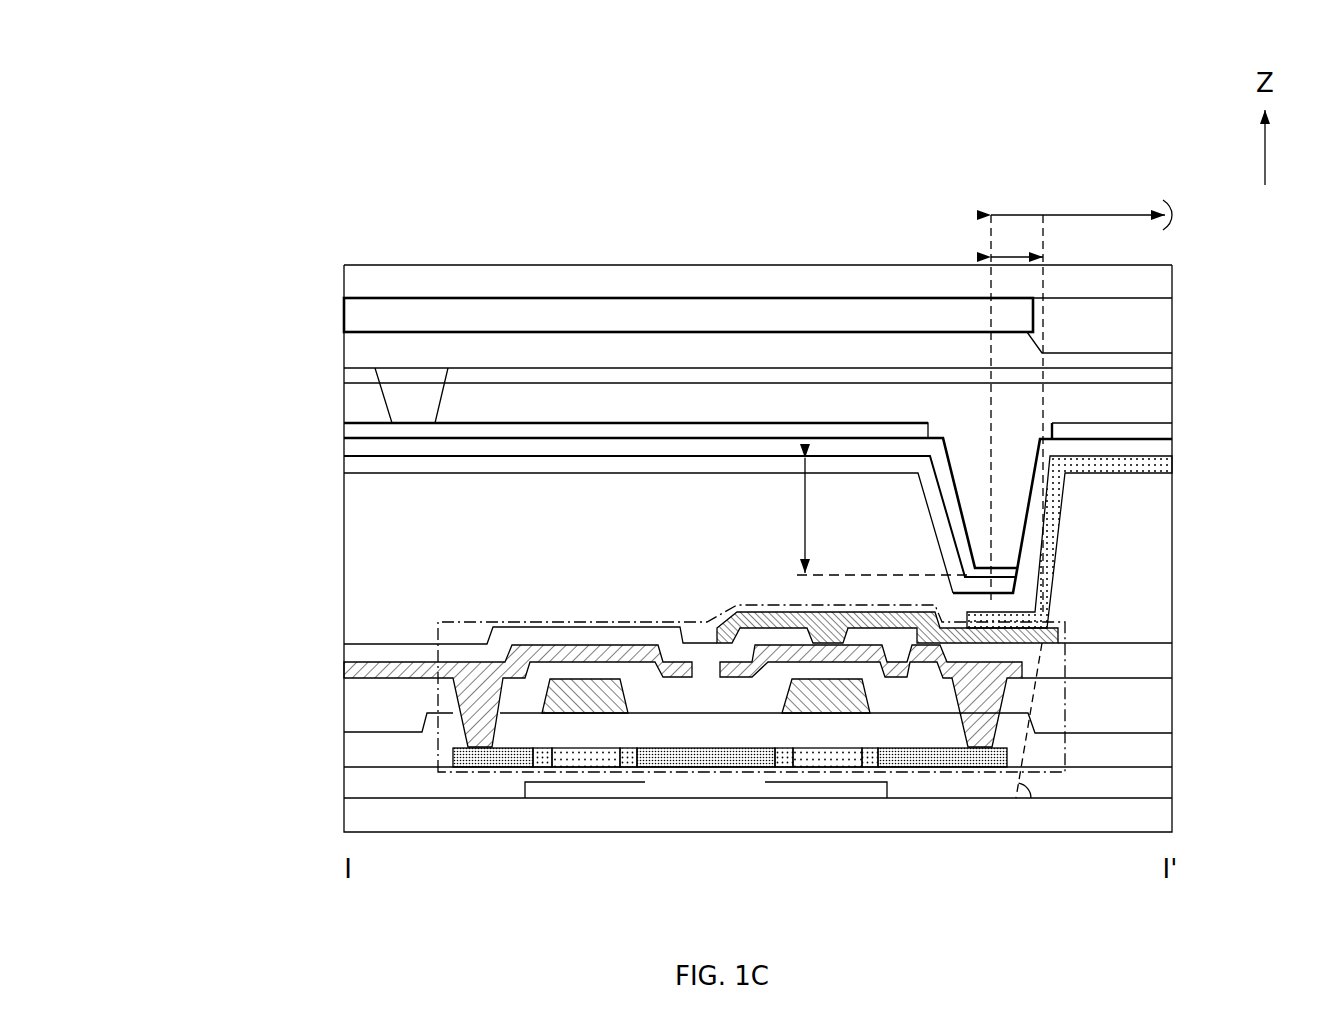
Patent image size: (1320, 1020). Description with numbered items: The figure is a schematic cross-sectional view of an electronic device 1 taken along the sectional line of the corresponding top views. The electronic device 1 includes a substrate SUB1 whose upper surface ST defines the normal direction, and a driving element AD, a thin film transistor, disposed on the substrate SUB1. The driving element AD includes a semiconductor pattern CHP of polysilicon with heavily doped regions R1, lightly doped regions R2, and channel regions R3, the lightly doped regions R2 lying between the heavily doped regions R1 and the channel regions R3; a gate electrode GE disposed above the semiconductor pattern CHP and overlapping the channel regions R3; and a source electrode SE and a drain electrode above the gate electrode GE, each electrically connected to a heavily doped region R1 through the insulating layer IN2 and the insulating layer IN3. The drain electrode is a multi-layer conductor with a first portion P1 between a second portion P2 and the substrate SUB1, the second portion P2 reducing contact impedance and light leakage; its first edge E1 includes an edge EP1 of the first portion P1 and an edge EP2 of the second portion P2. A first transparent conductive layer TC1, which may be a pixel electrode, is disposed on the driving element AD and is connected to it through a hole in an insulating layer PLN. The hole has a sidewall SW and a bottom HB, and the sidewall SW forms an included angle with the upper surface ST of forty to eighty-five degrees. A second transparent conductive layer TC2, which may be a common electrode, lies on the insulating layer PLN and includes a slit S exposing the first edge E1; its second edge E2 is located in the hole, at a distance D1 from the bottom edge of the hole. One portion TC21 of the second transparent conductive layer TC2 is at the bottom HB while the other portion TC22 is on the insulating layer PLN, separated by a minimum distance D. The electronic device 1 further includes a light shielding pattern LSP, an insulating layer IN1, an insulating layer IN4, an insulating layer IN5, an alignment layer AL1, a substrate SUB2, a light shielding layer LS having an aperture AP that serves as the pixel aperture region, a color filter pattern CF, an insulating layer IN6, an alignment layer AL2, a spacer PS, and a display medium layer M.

The driving element AD is at (937, 772).
The substrate SUB2 is at (1150, 283).
The substrate SUB1 is at (1150, 820).
The light shielding layer LS is at (362, 314).
The aperture AP is at (1039, 316).
The color filter pattern CF is at (1150, 332).
The insulating layer IN6 is at (1150, 357).
The alignment layer AL2 is at (1150, 380).
The spacer PS is at (398, 402).
The display medium layer M is at (1150, 405).
The alignment layer AL1 is at (1150, 430).
The other portion of the second transparent conductive layer TC22 is at (852, 436).
The portion of the second transparent conductive layer TC21 is at (978, 576).
The second transparent conductive layer TC2 is at (800, 197).
The insulating layer IN5 is at (1150, 450).
The first transparent conductive layer TC1 is at (1150, 473).
The insulating layer PLN is at (1150, 530).
The sidewall SW is at (1064, 521).
The bottom of the hole HB is at (953, 615).
The minimum distance D is at (873, 516).
The slit S is at (1081, 397).
The distance D1 is at (1017, 242).
The second edge E2 is at (992, 585).
The edge of the second portion EP2 is at (1062, 637).
The edge of the first portion EP1 is at (1028, 673).
The first edge E1 is at (1250, 596).
The insulating layer IN4 is at (1150, 660).
The source electrode SE is at (567, 652).
The first portion P1 is at (978, 702).
The second portion P2 is at (738, 612).
The gate electrode GE is at (803, 700).
The insulating layer IN3 is at (1150, 712).
The semiconductor pattern CHP is at (730, 844).
The heavily doped region R1 is at (507, 753).
The lightly doped region R2 is at (545, 753).
The channel region R3 is at (707, 818).
The insulating layer IN2 is at (1150, 752).
The insulating layer IN1 is at (1150, 783).
The light shielding pattern LSP is at (803, 790).
The upper surface ST is at (355, 796).
The electronic device 1 is at (1281, 934).